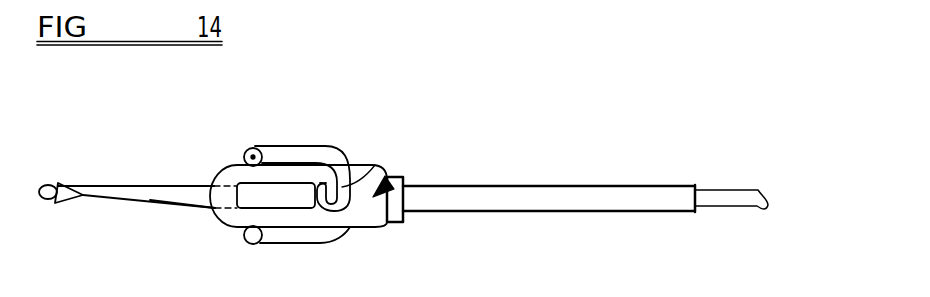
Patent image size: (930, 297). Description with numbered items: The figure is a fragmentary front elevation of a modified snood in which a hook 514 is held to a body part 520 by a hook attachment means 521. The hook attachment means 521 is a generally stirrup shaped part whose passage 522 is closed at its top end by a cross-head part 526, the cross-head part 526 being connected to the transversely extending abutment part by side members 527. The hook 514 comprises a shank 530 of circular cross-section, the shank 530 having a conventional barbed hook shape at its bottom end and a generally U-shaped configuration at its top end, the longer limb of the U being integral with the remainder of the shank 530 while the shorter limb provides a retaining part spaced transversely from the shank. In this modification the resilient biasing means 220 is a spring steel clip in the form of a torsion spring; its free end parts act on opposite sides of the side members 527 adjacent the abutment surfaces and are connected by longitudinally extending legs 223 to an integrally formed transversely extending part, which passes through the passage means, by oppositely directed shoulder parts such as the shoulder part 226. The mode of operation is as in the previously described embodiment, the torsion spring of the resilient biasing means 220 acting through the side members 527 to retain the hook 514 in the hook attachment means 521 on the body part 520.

The hook 514 is at (120, 190).
The shank 530 is at (180, 195).
The side members 527 is at (225, 162).
The passage 522 is at (255, 152).
The longitudinally extending legs 223 is at (311, 146).
The resilient biasing means 220 is at (347, 160).
The shoulder part 226 is at (385, 177).
The hook attachment means 521 is at (396, 177).
The body part 520 is at (548, 186).
The cross-head part 526 is at (364, 220).